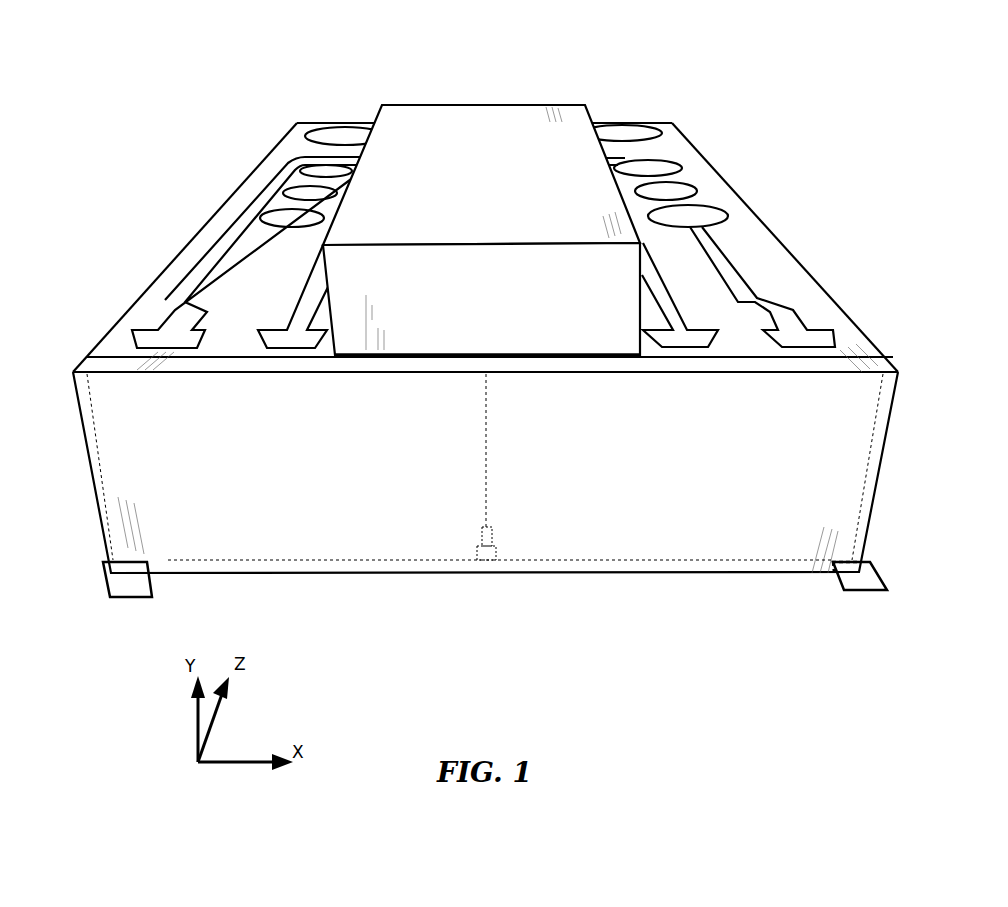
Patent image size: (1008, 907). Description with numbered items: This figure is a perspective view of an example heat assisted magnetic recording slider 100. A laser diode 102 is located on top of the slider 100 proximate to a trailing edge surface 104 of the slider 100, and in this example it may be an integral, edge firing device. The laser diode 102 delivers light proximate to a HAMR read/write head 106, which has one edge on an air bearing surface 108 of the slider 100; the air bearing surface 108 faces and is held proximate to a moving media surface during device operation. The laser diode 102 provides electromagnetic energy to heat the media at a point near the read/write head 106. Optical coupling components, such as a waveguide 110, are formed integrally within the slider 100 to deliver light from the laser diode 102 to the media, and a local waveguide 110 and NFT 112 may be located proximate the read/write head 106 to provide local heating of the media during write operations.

The HAMR slider 100 is at (688, 60).
The laser diode 102 is at (400, 104).
The trailing edge surface 104 is at (133, 597).
The HAMR read/write head 106 is at (493, 560).
The air bearing surface 108 is at (877, 591).
The waveguide 110 is at (486, 448).
The NFT 112 is at (485, 560).